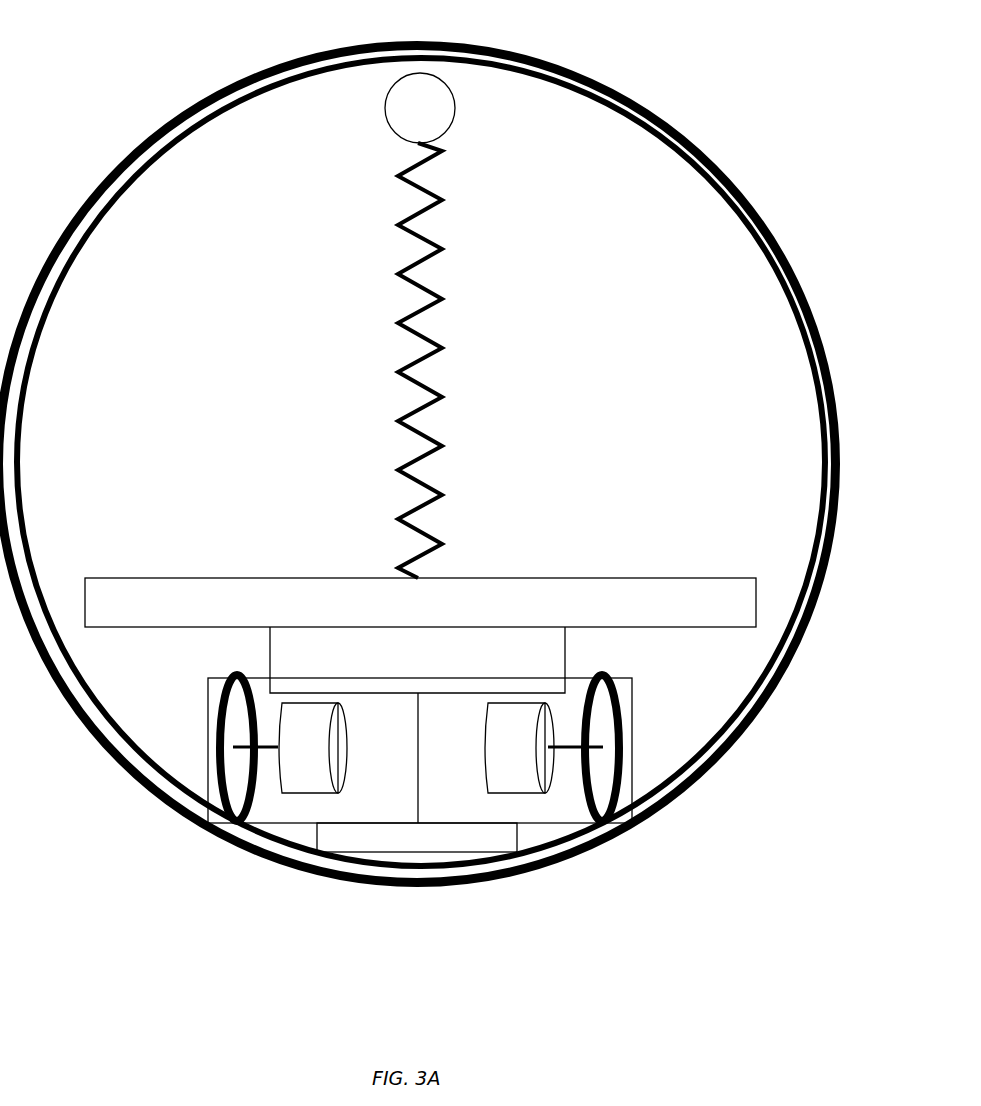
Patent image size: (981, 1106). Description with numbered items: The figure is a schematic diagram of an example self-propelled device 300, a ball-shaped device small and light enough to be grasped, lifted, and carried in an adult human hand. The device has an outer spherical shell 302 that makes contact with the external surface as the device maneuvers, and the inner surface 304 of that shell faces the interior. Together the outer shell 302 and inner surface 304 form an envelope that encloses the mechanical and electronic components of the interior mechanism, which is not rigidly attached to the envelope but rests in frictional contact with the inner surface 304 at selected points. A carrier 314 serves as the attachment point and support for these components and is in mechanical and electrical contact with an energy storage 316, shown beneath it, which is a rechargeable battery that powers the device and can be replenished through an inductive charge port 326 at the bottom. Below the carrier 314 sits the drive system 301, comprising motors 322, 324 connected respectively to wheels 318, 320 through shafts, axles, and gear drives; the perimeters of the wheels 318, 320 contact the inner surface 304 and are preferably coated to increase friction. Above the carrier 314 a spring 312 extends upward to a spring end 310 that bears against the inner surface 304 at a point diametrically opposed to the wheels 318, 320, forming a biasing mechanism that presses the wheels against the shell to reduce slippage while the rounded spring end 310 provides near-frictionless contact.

The self-propelled device 300 is at (125, 72).
The drive system 301 is at (153, 806).
The outer spherical shell 302 is at (727, 163).
The inner surface 304 is at (712, 213).
The spring end 310 is at (420, 108).
The spring 312 is at (402, 283).
The carrier 314 is at (420, 602).
The energy storage 316 is at (417, 660).
The wheel 318 is at (212, 737).
The wheel 320 is at (618, 750).
The motor 322 is at (313, 748).
The motor 324 is at (519, 748).
The inductive charge port 326 is at (448, 858).